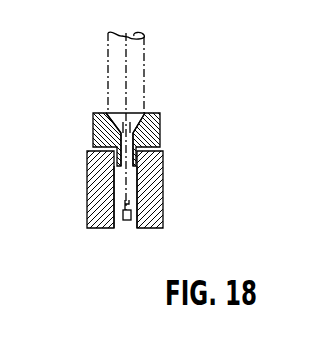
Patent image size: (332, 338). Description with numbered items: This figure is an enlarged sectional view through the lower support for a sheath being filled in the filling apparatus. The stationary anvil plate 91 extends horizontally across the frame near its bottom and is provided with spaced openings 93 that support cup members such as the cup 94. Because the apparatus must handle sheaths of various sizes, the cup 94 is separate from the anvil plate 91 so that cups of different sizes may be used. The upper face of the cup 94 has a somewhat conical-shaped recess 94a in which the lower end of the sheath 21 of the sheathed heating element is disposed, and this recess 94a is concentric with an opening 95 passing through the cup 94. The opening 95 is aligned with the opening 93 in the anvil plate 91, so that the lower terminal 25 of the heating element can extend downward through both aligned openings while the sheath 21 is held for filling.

The sheath 21 is at (146, 69).
The lower terminal 25 is at (128, 228).
The stationary anvil plate 91 is at (157, 205).
The openings 93 is at (115, 181).
The cup member 94 is at (161, 134).
The conical-shaped recess 94a is at (143, 112).
The opening 95 is at (103, 137).